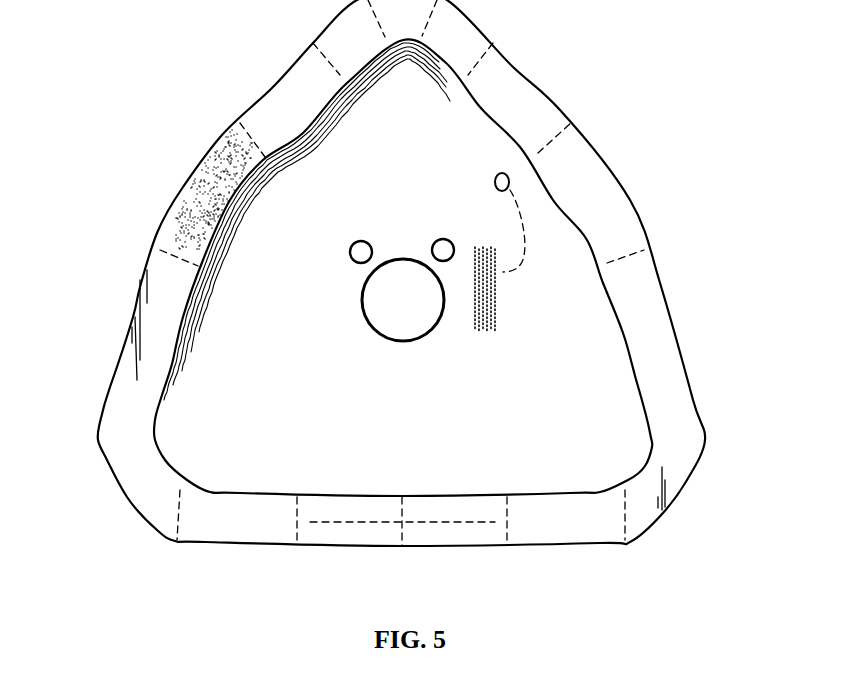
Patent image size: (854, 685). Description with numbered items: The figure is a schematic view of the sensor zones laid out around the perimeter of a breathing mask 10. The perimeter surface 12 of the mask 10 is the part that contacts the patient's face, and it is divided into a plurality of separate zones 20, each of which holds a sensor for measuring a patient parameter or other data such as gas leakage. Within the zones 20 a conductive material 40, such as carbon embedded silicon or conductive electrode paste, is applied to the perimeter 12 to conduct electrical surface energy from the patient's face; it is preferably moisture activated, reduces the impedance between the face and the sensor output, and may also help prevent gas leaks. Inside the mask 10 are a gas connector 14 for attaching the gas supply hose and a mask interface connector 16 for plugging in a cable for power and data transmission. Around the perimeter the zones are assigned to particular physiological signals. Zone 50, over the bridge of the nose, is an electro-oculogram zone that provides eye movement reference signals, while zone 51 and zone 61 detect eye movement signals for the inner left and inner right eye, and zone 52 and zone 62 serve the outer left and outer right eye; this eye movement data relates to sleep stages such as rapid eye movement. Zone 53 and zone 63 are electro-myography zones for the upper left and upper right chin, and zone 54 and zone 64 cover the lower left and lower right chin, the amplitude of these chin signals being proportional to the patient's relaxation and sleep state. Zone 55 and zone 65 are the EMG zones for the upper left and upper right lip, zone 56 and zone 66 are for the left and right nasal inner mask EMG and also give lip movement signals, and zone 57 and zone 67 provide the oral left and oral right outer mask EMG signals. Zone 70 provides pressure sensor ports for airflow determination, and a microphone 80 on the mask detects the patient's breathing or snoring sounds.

The mask 10 is at (667, 540).
The perimeter surface 12 is at (608, 197).
The gas connector 14 is at (385, 316).
The mask interface connector 16 is at (495, 314).
The zone 20 is at (602, 247).
The conductive material 40 is at (218, 162).
The EOG reference zone 50 is at (389, 28).
The inner left eye EOG zone 51 is at (335, 51).
The outer left eye EOG zone 52 is at (280, 116).
The upper left chin EMG zone 53 is at (193, 204).
The lower left chin EMG zone 54 is at (115, 416).
The upper left lip EMG zone 55 is at (228, 530).
The left nasal inner mask EMG zone 56 is at (346, 505).
The oral left outer mask EMG zone 57 is at (345, 532).
The inner right eye EOG zone 61 is at (440, 51).
The outer right eye EOG zone 62 is at (498, 118).
The upper right chin EMG zone 63 is at (560, 173).
The lower right chin EMG zone 64 is at (647, 396).
The upper right lip EMG zone 65 is at (552, 530).
The right nasal inner mask EMG zone 66 is at (456, 505).
The oral right outer mask EMG zone 67 is at (458, 533).
The pressure sensor port zone 70 is at (348, 255).
The microphone 80 is at (495, 183).